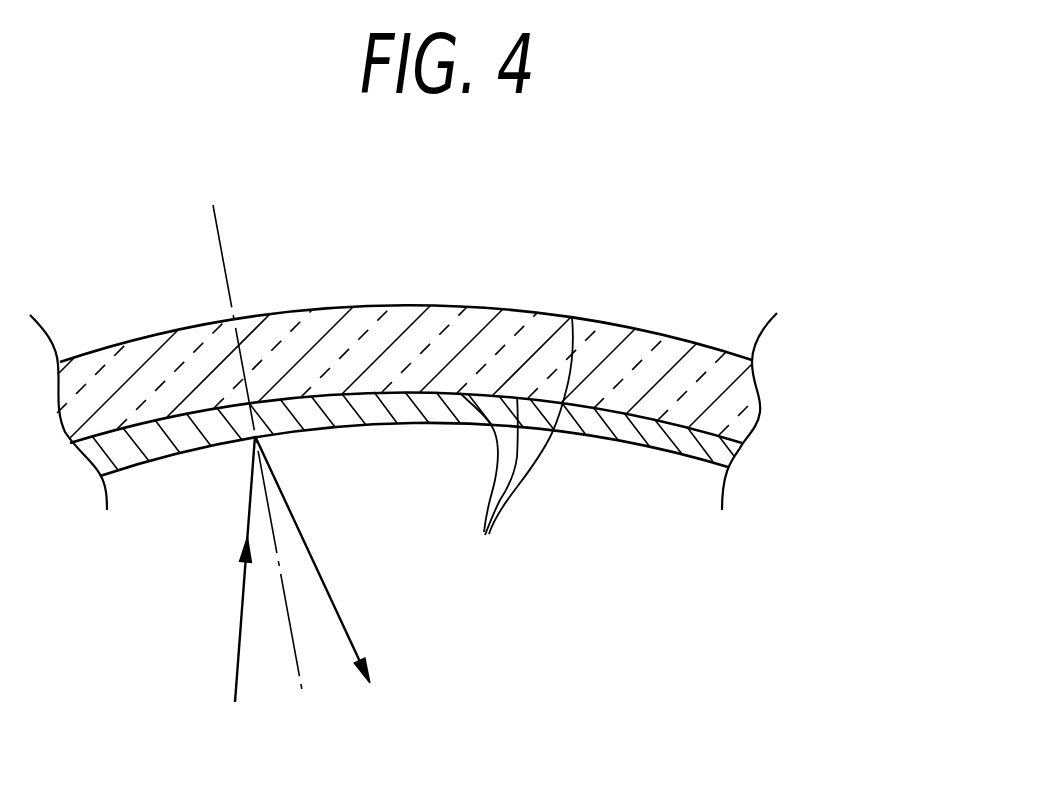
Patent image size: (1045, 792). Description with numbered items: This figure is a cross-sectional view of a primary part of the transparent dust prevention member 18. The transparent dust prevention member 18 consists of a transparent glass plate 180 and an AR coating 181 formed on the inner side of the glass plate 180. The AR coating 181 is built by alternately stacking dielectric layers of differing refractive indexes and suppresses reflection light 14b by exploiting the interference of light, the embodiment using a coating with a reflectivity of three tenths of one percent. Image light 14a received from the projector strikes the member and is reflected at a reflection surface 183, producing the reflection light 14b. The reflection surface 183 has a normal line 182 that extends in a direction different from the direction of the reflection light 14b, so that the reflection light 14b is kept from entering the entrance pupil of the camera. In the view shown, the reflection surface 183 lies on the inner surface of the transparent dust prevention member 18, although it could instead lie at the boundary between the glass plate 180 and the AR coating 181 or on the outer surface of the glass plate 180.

The transparent dust prevention member 18 is at (885, 383).
The transparent glass plate 180 is at (735, 404).
The AR coating 181 is at (735, 448).
The normal line 182 is at (297, 663).
The reflection surface 183 is at (516, 454).
The image light 14a is at (243, 587).
The reflection light 14b is at (347, 630).